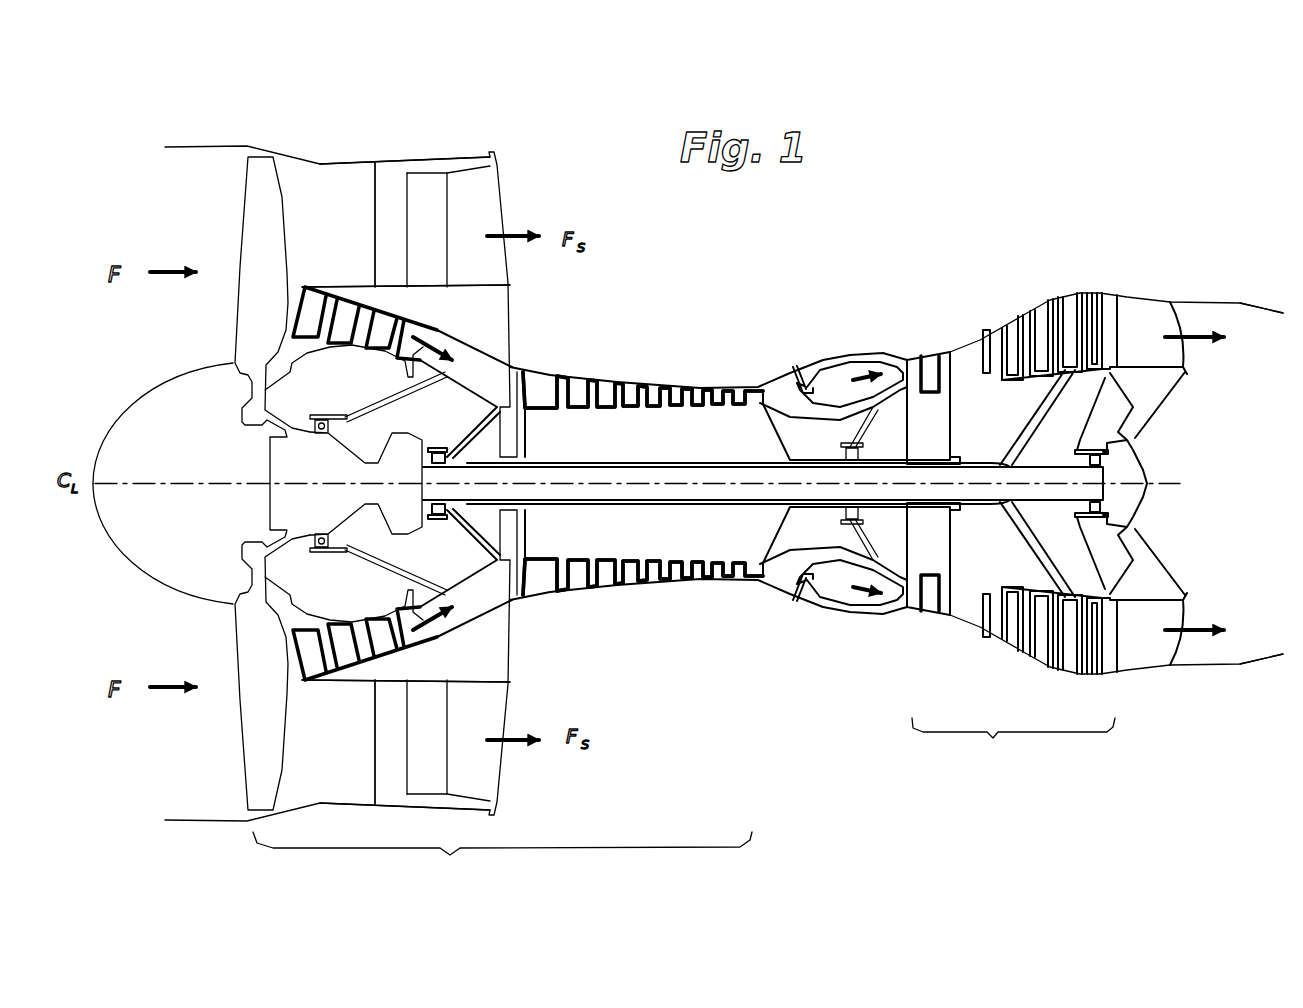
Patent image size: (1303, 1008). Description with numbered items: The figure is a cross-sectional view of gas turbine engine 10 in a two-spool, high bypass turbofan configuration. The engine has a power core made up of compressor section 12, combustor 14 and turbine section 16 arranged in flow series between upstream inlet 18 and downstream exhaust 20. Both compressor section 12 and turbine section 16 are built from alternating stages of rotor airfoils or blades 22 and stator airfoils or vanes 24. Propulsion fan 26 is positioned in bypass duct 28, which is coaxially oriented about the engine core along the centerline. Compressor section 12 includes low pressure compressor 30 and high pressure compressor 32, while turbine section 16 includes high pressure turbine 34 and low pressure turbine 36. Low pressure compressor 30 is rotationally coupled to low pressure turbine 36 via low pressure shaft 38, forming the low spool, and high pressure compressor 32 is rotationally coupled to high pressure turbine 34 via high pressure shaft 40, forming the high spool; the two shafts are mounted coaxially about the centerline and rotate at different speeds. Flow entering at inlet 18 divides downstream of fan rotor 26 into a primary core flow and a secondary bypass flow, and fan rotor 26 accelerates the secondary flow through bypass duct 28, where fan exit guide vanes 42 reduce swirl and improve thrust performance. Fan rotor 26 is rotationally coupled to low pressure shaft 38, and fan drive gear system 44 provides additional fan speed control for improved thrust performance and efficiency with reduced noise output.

The gas turbine engine 10 is at (133, 117).
The compressor section 12 is at (502, 856).
The combustor 14 is at (848, 362).
The turbine section 16 is at (1013, 745).
The upstream inlet 18 is at (152, 364).
The downstream exhaust 20 is at (1228, 430).
The rotor airfoils 22 is at (564, 378).
The stator airfoils 24 is at (606, 376).
The propulsion fan 26 is at (255, 230).
The bypass duct 28 is at (352, 233).
The low pressure compressor 30 is at (462, 644).
The high pressure compressor 32 is at (646, 600).
The high pressure turbine 34 is at (935, 627).
The low pressure turbine 36 is at (1005, 664).
The low pressure shaft 38 is at (683, 495).
The high pressure shaft 40 is at (790, 507).
The fan exit guide vanes 42 is at (382, 170).
The fan drive gear system 44 is at (405, 432).